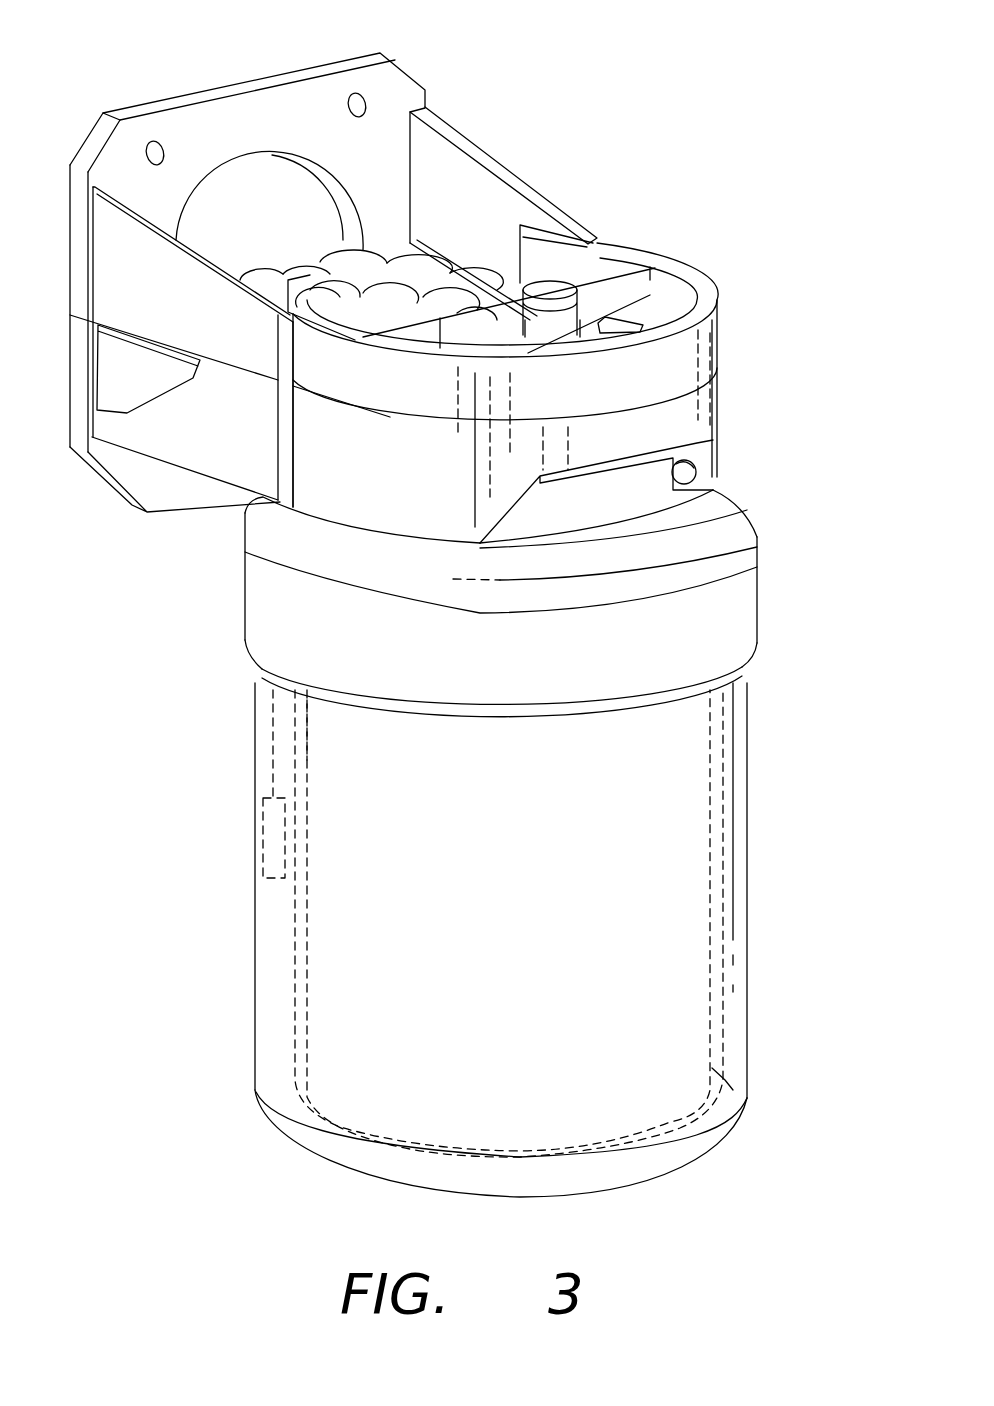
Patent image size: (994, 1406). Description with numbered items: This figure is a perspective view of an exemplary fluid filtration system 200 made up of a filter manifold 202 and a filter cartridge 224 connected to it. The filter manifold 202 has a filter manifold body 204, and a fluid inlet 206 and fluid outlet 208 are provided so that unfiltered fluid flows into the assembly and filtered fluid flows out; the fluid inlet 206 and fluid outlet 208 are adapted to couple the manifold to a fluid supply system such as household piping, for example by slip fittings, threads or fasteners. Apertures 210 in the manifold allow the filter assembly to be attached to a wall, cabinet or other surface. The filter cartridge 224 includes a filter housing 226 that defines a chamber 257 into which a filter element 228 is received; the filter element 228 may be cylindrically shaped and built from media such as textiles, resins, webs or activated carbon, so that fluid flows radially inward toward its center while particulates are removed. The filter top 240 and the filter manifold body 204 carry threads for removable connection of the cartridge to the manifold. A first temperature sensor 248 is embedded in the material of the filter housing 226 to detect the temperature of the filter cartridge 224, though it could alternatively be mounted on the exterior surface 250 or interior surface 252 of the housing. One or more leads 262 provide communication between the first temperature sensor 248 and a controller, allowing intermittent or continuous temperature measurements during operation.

The fluid filtration system 200 is at (565, 118).
The filter manifold 202 is at (648, 242).
The filter manifold body 204 is at (692, 362).
The fluid inlet 206 is at (323, 267).
The fluid outlet 208 is at (242, 275).
The apertures 210 is at (163, 146).
The filter cartridge 224 is at (192, 779).
The filter housing 226 is at (255, 1003).
The filter element 228 is at (305, 940).
The filter top 240 is at (257, 618).
The first temperature sensor 248 is at (263, 858).
The exterior surface 250 is at (257, 1047).
The interior surface 252 is at (307, 907).
The chamber 257 is at (770, 1069).
The leads 262 is at (277, 740).